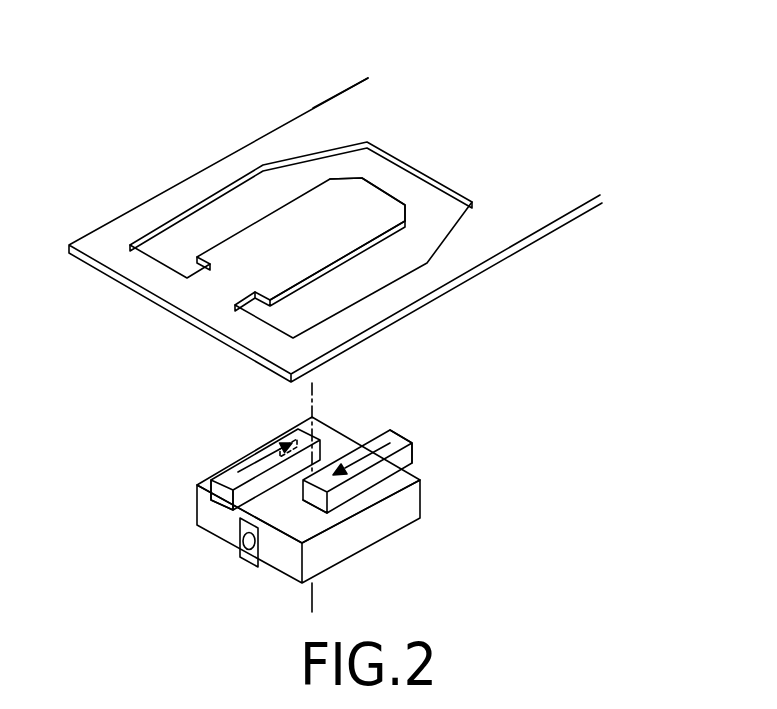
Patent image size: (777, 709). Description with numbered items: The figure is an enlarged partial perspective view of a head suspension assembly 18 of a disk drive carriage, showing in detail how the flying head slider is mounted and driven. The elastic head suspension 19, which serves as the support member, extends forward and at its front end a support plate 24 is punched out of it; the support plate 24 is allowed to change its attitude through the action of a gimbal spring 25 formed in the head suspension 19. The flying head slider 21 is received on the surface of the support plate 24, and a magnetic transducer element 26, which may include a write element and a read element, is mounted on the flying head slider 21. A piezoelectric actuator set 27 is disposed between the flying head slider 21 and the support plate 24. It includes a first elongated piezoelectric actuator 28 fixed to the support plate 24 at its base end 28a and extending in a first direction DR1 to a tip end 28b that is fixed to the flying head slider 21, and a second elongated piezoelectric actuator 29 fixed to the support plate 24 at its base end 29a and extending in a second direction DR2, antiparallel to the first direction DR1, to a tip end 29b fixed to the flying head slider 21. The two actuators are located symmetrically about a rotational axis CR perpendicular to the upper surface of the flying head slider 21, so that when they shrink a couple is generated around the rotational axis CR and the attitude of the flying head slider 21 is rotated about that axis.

The head suspension assembly 18 is at (182, 172).
The head suspension 19 is at (313, 108).
The flying head slider 21 is at (208, 523).
The support plate 24 is at (372, 192).
The gimbal spring 25 is at (200, 267).
The magnetic transducer element 26 is at (242, 552).
The piezoelectric actuator set 27 is at (447, 437).
The first elongated piezoelectric actuator 28 is at (232, 463).
The base end 28a is at (208, 470).
The tip end 28b is at (297, 446).
The second elongated piezoelectric actuator 29 is at (392, 496).
The base end 29a is at (398, 433).
The tip end 29b is at (317, 503).
The rotational axis CR is at (312, 383).
The first direction DR1 is at (262, 460).
The second direction DR2 is at (372, 447).